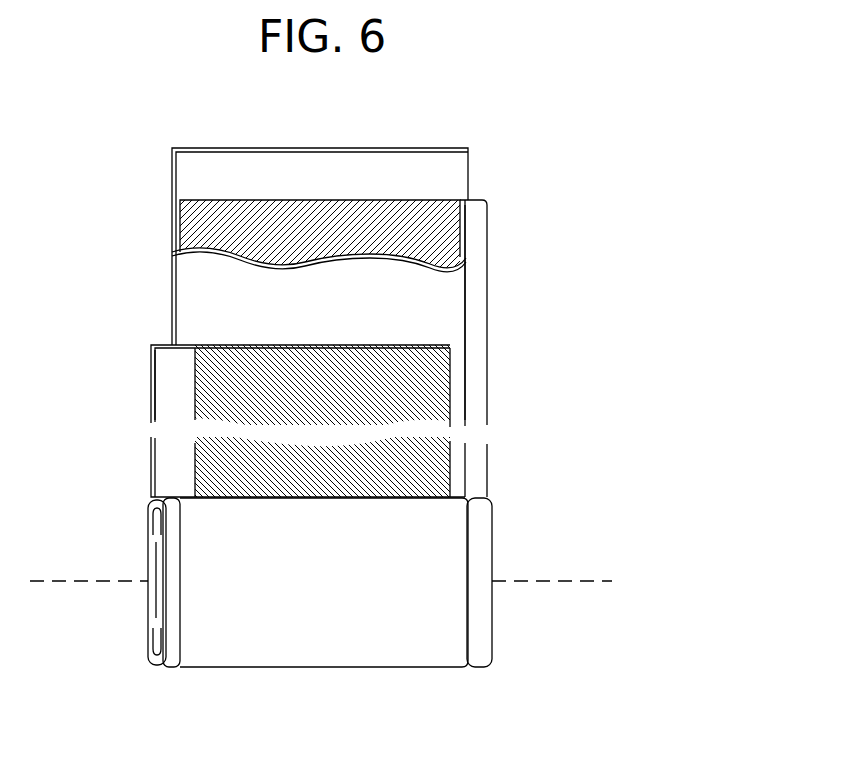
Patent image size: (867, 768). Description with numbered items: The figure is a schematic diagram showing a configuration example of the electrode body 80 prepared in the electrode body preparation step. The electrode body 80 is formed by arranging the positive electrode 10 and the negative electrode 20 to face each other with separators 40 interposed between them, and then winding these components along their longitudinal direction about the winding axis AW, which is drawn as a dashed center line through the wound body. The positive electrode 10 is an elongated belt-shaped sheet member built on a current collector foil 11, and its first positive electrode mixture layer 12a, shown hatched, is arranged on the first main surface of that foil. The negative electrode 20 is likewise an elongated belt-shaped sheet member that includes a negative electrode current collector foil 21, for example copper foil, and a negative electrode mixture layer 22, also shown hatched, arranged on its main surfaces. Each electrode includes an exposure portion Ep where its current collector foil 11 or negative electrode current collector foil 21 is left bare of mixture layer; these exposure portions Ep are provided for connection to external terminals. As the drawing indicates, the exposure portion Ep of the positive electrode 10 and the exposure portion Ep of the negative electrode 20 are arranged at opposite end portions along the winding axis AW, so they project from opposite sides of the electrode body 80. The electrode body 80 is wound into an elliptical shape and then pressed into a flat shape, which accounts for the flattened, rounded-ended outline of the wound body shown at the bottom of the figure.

The separator 40 is at (237, 148).
The negative electrode 20 is at (390, 312).
The negative electrode mixture layer 22 is at (430, 200).
The negative electrode current collector foil 21 is at (477, 200).
The positive electrode 10 is at (256, 381).
The first positive electrode mixture layer 12a is at (218, 345).
The current collector foil 11 is at (168, 343).
The exposure portion Ep is at (473, 250).
The winding axis AW is at (550, 578).
The electrode body 80 is at (470, 690).